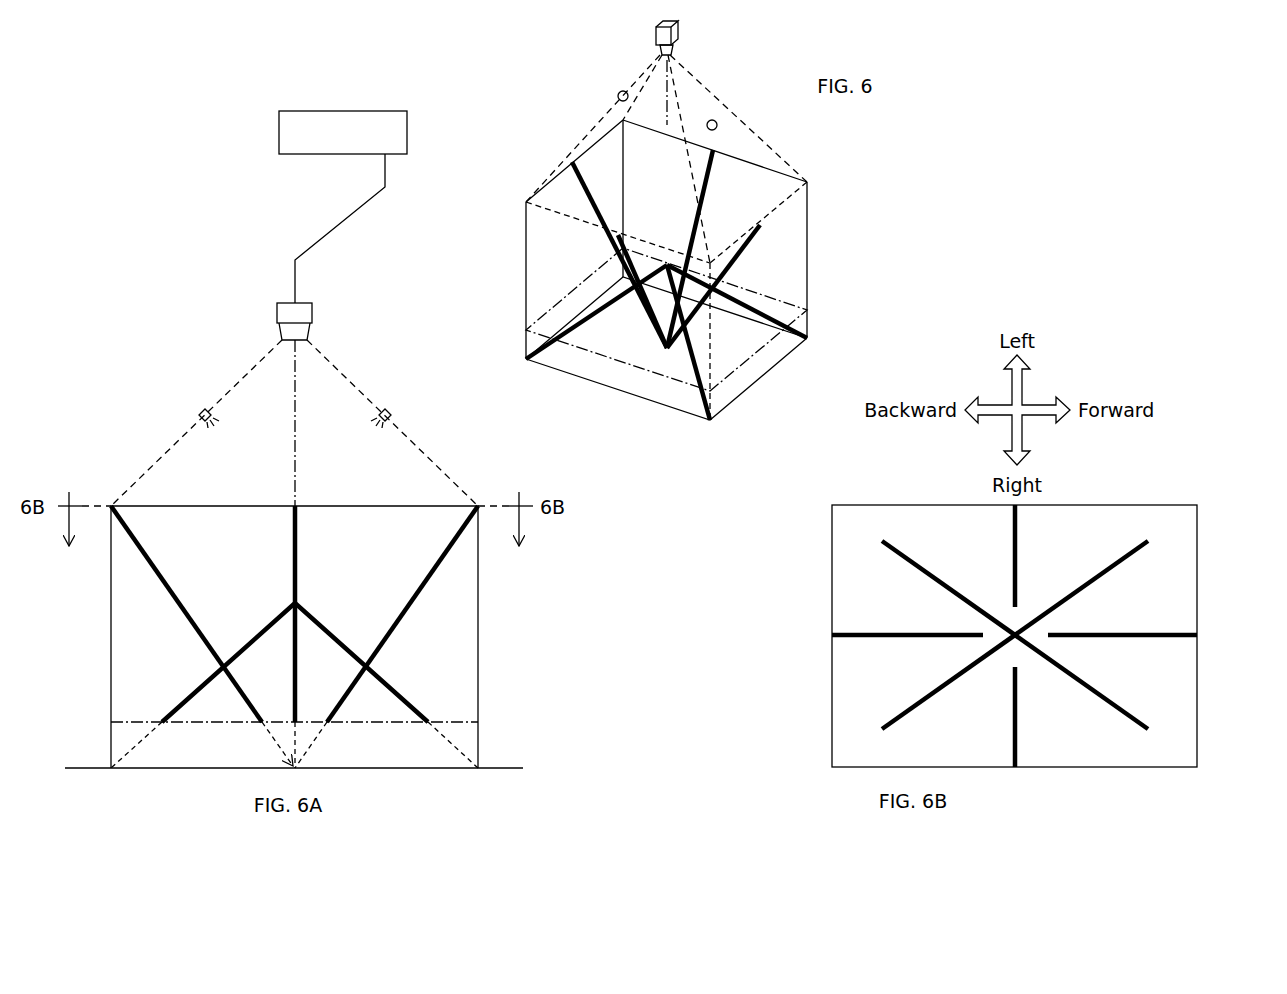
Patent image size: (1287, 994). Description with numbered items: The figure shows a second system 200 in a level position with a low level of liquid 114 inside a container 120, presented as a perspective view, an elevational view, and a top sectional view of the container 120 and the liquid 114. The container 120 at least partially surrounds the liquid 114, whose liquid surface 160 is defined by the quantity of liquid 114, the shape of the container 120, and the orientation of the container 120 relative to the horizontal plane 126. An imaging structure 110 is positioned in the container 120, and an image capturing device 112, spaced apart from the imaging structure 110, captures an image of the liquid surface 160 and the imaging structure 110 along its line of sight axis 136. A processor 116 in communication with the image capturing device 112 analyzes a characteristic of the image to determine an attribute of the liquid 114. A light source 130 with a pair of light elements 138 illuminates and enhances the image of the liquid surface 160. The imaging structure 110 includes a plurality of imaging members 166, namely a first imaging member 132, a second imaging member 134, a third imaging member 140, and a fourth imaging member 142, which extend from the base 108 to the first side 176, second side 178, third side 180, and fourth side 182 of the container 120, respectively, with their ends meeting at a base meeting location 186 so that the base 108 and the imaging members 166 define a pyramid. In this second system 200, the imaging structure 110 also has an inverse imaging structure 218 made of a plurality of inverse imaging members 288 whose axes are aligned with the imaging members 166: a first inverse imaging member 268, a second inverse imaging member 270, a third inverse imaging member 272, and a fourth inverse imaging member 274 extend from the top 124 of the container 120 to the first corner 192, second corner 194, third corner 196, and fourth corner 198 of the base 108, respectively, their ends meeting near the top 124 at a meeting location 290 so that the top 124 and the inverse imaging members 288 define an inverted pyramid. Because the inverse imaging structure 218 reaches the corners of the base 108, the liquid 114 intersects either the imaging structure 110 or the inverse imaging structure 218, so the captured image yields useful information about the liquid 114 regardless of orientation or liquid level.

In FIG. 6A, the base 108 is at (442, 768).
In FIG. 6A, the imaging structure 110 is at (146, 571).
In FIG. 6, the imaging structure 110 is at (795, 245).
In FIG. 6B, the imaging structure 110 is at (1014, 636).
In FIG. 6A, the image capturing device 112 is at (286, 308).
In FIG. 6, the image capturing device 112 is at (678, 38).
In FIG. 6A, the liquid 114 is at (225, 756).
In FIG. 6A, the processor 116 is at (279, 121).
In FIG. 6A, the container 120 is at (478, 595).
In FIG. 6, the container 120 is at (807, 288).
In FIG. 6, the top 124 is at (540, 190).
In FIG. 6A, the horizontal plane 126 is at (510, 766).
In FIG. 6A, the light source 130 is at (266, 312).
In FIG. 6, the light source 130 is at (651, 38).
In FIG. 6A, the first imaging member 132 is at (295, 562).
In FIG. 6, the first imaging member 132 is at (640, 256).
In FIG. 6B, the first imaging member 132 is at (1018, 748).
In FIG. 6A, the second imaging member 134 is at (400, 623).
In FIG. 6, the second imaging member 134 is at (737, 264).
In FIG. 6B, the second imaging member 134 is at (1185, 635).
In FIG. 6A, the line of sight axis 136 is at (295, 478).
In FIG. 6, the line of sight axis 136 is at (664, 112).
In FIG. 6A, the light elements 138 is at (200, 412).
In FIG. 6, the light elements 138 is at (618, 97).
In FIG. 6A, the third imaging member 140 is at (170, 598).
In FIG. 6, the third imaging member 140 is at (598, 215).
In FIG. 6B, the third imaging member 140 is at (855, 637).
In FIG. 6, the fourth imaging member 142 is at (710, 173).
In FIG. 6B, the fourth imaging member 142 is at (1010, 532).
In FIG. 6A, the liquid surface 160 is at (448, 722).
In FIG. 6, the plurality of imaging members 166 is at (795, 215).
In FIG. 6B, the first side 176 is at (848, 768).
In FIG. 6B, the second side 178 is at (1199, 667).
In FIG. 6B, the third side 180 is at (1198, 503).
In FIG. 6B, the fourth side 182 is at (830, 542).
In FIG. 6, the base meeting location 186 is at (670, 350).
In FIG. 6B, the first corner 192 is at (1199, 766).
In FIG. 6B, the second corner 194 is at (1199, 517).
In FIG. 6B, the third corner 196 is at (830, 502).
In FIG. 6B, the fourth corner 198 is at (830, 767).
In FIG. 6A, the second system 200 is at (76, 341).
In FIG. 6, the second system 200 is at (835, 176).
In FIG. 6B, the second system 200 is at (1151, 488).
In FIG. 6A, the inverse imaging structure 218 is at (269, 607).
In FIG. 6, the inverse imaging structure 218 is at (593, 338).
In FIG. 6A, the first inverse imaging member 268 is at (135, 745).
In FIG. 6, the first inverse imaging member 268 is at (558, 342).
In FIG. 6B, the first inverse imaging member 268 is at (893, 717).
In FIG. 6A, the second inverse imaging member 270 is at (448, 743).
In FIG. 6, the second inverse imaging member 270 is at (700, 387).
In FIG. 6B, the second inverse imaging member 270 is at (1137, 732).
In FIG. 6, the third inverse imaging member 272 is at (750, 312).
In FIG. 6B, the third inverse imaging member 272 is at (1152, 556).
In FIG. 6, the fourth inverse imaging member 274 is at (668, 251).
In FIG. 6B, the fourth inverse imaging member 274 is at (908, 557).
In FIG. 6A, the plurality of inverse imaging members 288 is at (239, 623).
In FIG. 6, the plurality of inverse imaging members 288 is at (613, 327).
In FIG. 6, the meeting location 290 is at (703, 232).